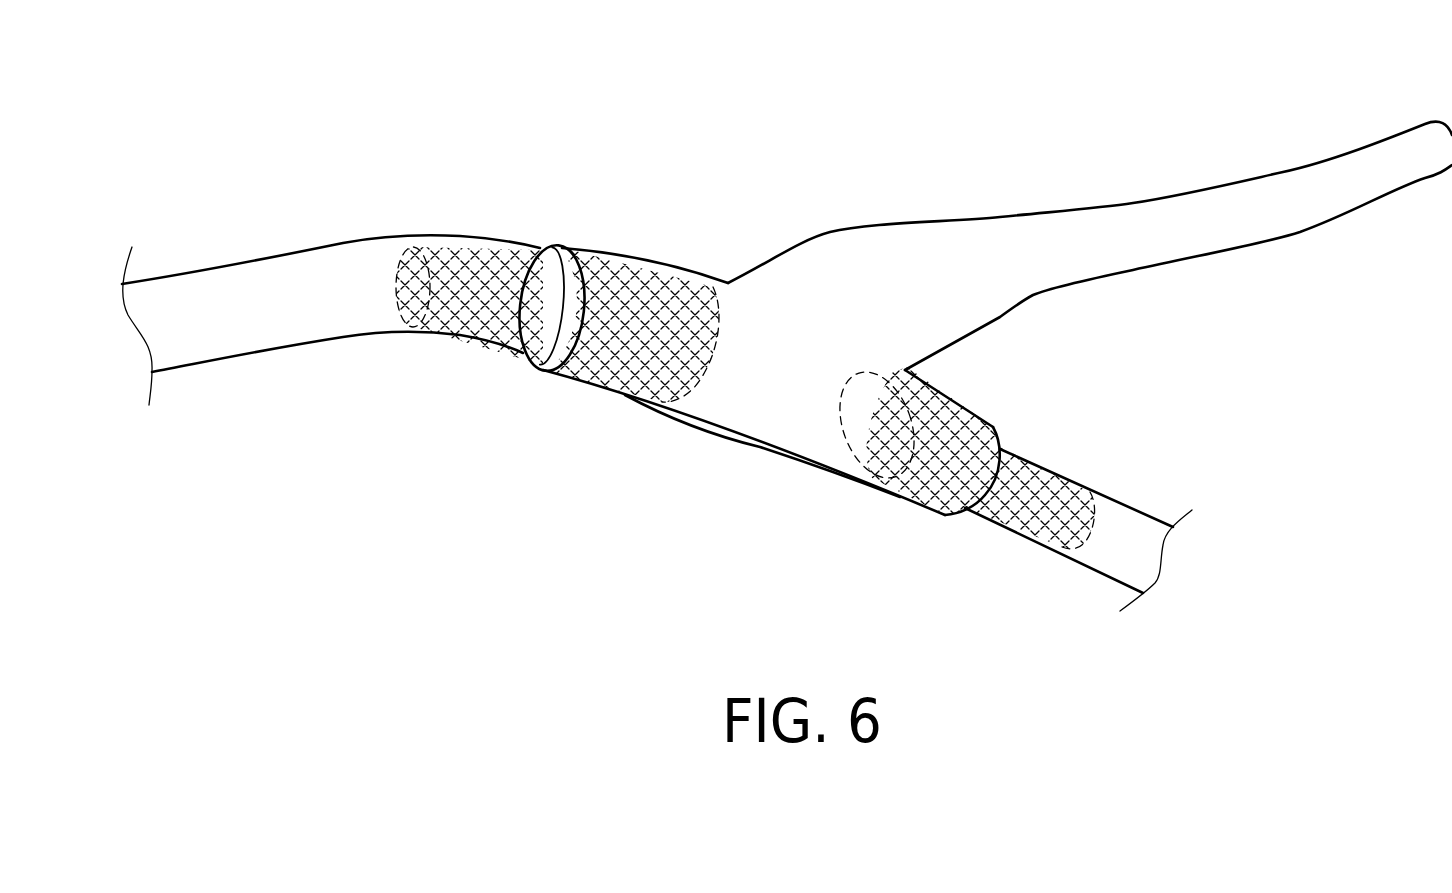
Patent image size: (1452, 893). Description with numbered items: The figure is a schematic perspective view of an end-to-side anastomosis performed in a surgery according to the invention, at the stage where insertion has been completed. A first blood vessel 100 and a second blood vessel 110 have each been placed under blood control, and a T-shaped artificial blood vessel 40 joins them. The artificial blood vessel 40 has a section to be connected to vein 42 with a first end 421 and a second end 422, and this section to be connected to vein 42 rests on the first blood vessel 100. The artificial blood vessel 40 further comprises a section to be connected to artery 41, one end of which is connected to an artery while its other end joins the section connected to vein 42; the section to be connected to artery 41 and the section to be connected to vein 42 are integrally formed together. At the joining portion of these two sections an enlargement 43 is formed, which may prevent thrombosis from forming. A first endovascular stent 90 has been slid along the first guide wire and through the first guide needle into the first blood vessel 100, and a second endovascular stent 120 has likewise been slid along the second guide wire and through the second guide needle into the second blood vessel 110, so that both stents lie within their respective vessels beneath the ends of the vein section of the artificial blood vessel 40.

The artificial blood vessel 40 is at (983, 306).
The section to be connected to artery 41 is at (1288, 198).
The section to be connected to vein 42 is at (760, 455).
The enlargement 43 is at (827, 273).
The first end 421 is at (987, 413).
The second end 422 is at (677, 273).
The first endovascular stent 90 is at (1070, 463).
The first blood vessel 100 is at (1130, 520).
The second blood vessel 110 is at (313, 322).
The second endovascular stent 120 is at (483, 348).